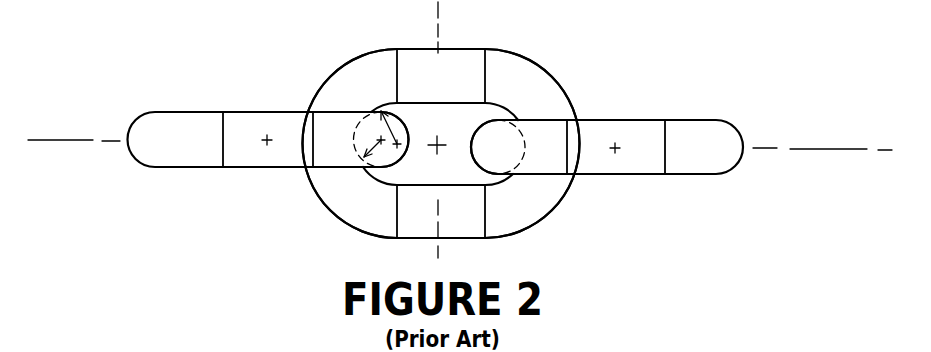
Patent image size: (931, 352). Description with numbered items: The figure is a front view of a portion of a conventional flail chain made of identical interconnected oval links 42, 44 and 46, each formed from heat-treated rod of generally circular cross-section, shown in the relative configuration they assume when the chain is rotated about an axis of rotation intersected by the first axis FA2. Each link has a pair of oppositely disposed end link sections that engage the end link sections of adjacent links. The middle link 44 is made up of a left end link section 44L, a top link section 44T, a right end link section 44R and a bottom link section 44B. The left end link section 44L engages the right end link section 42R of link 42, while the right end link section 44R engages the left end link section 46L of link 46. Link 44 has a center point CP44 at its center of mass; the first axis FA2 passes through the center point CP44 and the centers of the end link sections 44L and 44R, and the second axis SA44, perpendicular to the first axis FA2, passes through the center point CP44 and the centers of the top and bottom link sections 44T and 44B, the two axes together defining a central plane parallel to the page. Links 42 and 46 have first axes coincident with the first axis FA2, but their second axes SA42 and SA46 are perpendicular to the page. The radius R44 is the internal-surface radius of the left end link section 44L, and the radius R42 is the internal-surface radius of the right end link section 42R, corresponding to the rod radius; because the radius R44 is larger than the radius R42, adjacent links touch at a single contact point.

The oval link 42 is at (193, 180).
The oval link 44 is at (550, 53).
The oval link 46 is at (706, 107).
The top link section 44T is at (410, 73).
The bottom link section 44B is at (417, 225).
The left end link section 44L is at (353, 210).
The right end link section 44R is at (522, 210).
The left end link section 46L is at (547, 142).
The right end link section 42R is at (338, 150).
The radius R42 is at (362, 158).
The radius R44 is at (384, 120).
The center point CP44 is at (442, 132).
The second axis SA42 is at (258, 137).
The second axis SA44 is at (433, 15).
The second axis SA46 is at (622, 158).
The first axis FA2 is at (52, 137).